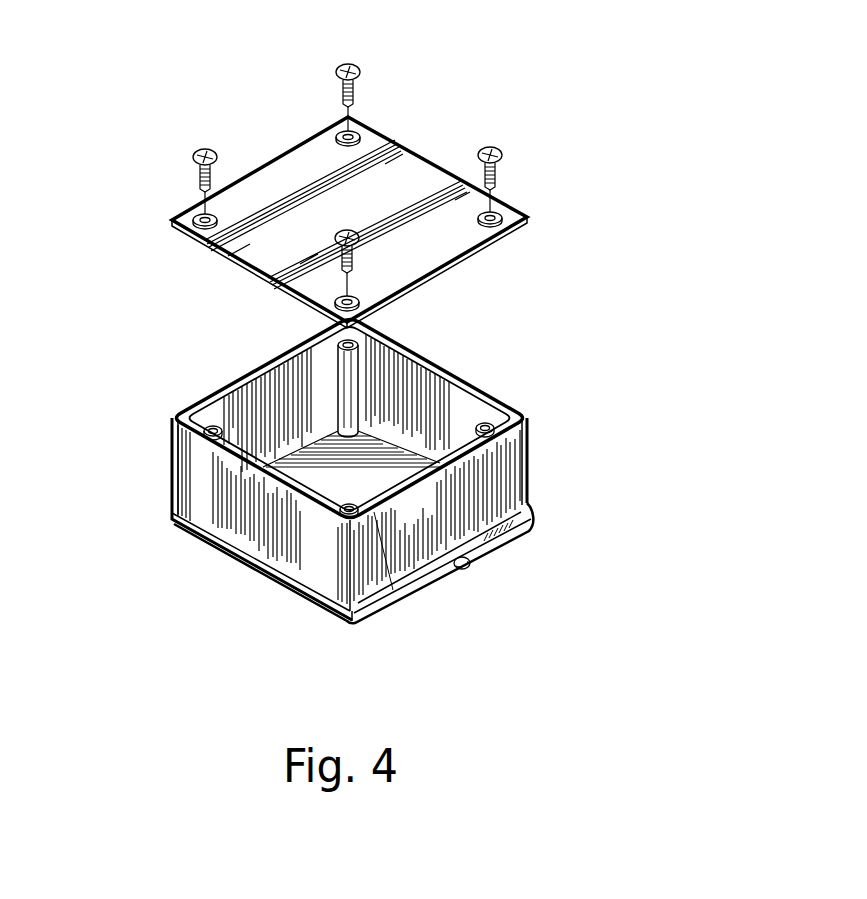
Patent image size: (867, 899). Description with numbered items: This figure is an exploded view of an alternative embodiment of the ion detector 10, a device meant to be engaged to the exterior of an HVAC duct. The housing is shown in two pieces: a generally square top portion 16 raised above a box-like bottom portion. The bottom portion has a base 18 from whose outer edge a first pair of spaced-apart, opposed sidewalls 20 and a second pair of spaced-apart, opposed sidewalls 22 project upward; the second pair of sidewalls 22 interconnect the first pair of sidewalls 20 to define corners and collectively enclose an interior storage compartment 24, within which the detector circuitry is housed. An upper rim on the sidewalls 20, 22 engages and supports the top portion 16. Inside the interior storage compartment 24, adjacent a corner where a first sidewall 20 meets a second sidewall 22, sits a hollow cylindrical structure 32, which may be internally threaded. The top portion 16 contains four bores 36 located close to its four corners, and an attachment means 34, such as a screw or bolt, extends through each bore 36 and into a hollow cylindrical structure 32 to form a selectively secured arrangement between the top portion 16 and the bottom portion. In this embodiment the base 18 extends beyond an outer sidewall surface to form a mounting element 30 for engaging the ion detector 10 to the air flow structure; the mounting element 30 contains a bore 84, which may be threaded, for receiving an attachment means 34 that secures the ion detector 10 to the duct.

The ion detector 10 is at (392, 338).
The top portion 16 is at (280, 178).
The base 18 is at (320, 477).
The first pair of spaced-apart, opposed sidewalls 20 is at (430, 397).
The second pair of spaced-apart, opposed sidewalls 22 is at (240, 412).
The interior storage compartment 24 is at (310, 415).
The mounting element 30 is at (531, 534).
The hollow cylindrical structure 32 is at (200, 432).
The attachment means 34 is at (342, 62).
The bore 36 is at (357, 137).
The bore 84 is at (480, 570).